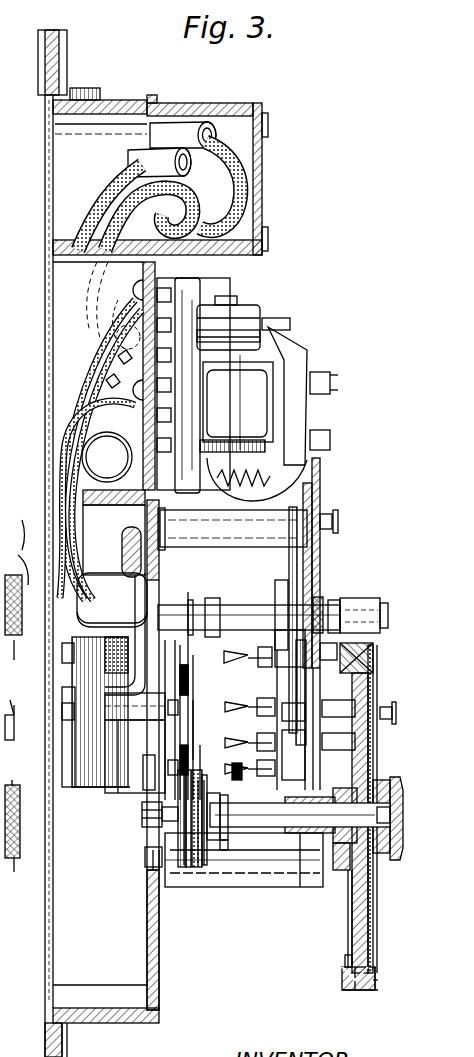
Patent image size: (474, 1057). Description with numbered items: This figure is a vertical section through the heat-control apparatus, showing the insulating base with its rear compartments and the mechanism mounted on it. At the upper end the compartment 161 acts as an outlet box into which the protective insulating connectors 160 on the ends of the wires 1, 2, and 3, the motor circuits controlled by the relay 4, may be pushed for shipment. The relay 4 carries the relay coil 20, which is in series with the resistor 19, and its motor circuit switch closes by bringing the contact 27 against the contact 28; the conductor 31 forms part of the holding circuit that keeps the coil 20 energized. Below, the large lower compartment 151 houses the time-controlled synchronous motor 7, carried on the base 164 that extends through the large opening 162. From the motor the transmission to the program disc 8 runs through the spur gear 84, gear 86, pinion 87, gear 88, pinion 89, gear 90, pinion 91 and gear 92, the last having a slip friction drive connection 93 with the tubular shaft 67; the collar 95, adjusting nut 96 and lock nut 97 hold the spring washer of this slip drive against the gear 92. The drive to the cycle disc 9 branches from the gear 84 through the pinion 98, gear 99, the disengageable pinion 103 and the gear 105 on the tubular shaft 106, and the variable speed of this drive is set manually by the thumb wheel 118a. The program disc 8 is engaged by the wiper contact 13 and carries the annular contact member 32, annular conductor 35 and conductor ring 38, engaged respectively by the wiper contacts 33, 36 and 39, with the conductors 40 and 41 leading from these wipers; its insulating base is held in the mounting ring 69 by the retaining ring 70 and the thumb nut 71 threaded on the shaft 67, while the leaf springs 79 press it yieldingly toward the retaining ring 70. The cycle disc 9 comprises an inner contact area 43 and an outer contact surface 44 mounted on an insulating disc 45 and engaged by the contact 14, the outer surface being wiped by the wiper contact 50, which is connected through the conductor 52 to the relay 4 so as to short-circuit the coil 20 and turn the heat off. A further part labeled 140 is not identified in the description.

The motor circuit conductor 1 is at (205, 174).
The motor circuit conductor 2 is at (215, 229).
The motor circuit conductor 3 is at (235, 200).
The relay 4 is at (269, 307).
The time-controlled motor 7 is at (91, 794).
The program circuit-controlling disc 8 is at (336, 962).
The cycle circuit-controlling disc 9 is at (327, 492).
The wiper contact 13 is at (401, 713).
The wiper contact 14 is at (339, 522).
The resistor 19 is at (90, 456).
The relay coil 20 is at (215, 385).
The contact 27 is at (312, 356).
The contact 28 is at (300, 346).
The conductor 31 is at (255, 486).
The annular contact member 32 is at (360, 892).
The wiper contact 33 is at (372, 743).
The annular conductor 35 is at (358, 920).
The contact wiper 36 is at (374, 690).
The conductor ring 38 is at (366, 616).
The contact wiper 39 is at (343, 645).
The conductor 40 is at (238, 728).
The conductor 41 is at (238, 690).
The inner contact area 43 is at (321, 503).
The outer contact surface 44 is at (328, 459).
The insulating disc 45 is at (305, 560).
The wiper contact 50 is at (284, 820).
The conductor 52 is at (78, 328).
The tubular shaft 67 is at (313, 833).
The mounting ring 69 is at (363, 990).
The retaining ring 70 is at (375, 980).
The thumb nut 71 is at (391, 857).
The leaf springs 79 is at (352, 962).
The spur gear 84 is at (194, 670).
The gear 86 is at (233, 661).
The pinion 87 is at (189, 705).
The gear 88 is at (165, 780).
The pinion 89 is at (172, 763).
The gear 90 is at (189, 733).
The pinion 91 is at (203, 758).
The gear 92 is at (200, 865).
The slip friction drive connection 93 is at (206, 850).
The collar 95 is at (190, 860).
The adjusting nut 96 is at (207, 850).
The lock nut 97 is at (228, 842).
The pinion 98 is at (189, 678).
The gear 99 is at (192, 593).
The pinion 103 is at (17, 695).
The gear 105 is at (232, 529).
The tubular shaft 106 is at (248, 608).
The thumb wheel 118a is at (17, 532).
The housing wall 140 is at (168, 1007).
The large lower compartment 151 is at (73, 971).
The protective insulating connectors 160 is at (190, 128).
The compartment 161 is at (95, 148).
The large opening 162 is at (150, 875).
The base 164 is at (162, 600).